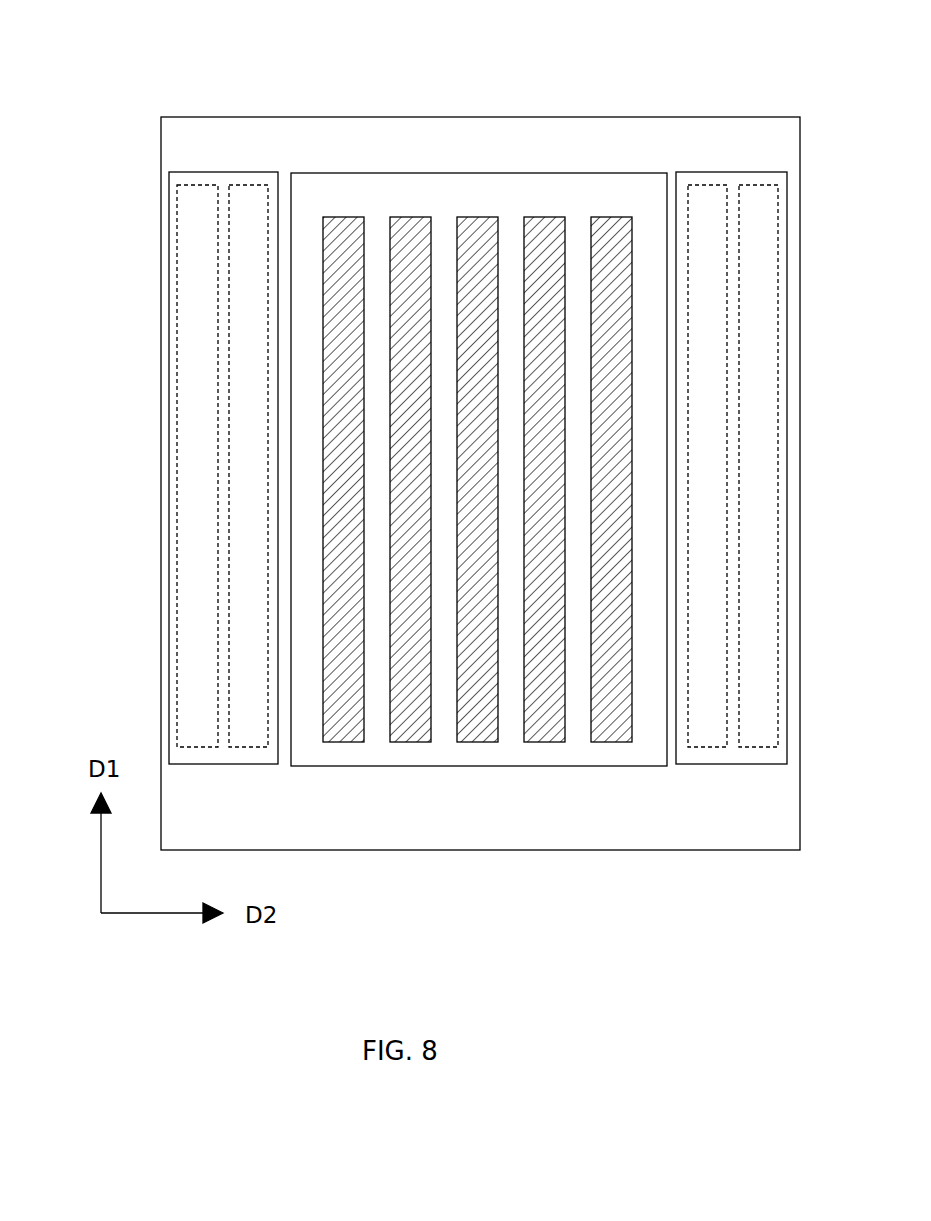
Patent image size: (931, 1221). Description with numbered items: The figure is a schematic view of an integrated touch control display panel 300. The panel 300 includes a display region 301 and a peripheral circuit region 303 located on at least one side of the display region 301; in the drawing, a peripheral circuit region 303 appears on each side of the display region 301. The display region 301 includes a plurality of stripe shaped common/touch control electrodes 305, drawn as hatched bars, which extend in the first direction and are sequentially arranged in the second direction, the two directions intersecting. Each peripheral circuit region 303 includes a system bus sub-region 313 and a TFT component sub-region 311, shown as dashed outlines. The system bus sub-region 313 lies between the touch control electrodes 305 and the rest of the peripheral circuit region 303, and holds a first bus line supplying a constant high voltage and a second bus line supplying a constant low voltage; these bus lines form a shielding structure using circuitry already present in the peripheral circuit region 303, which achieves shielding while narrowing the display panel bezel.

The integrated touch control display panel 300 is at (123, 76).
The display region 301 is at (548, 188).
The peripheral circuit region 303 is at (233, 180).
The common/touch control electrodes 305 is at (421, 220).
The TFT component sub-region 311 is at (205, 280).
The system bus sub-region 313 is at (255, 330).